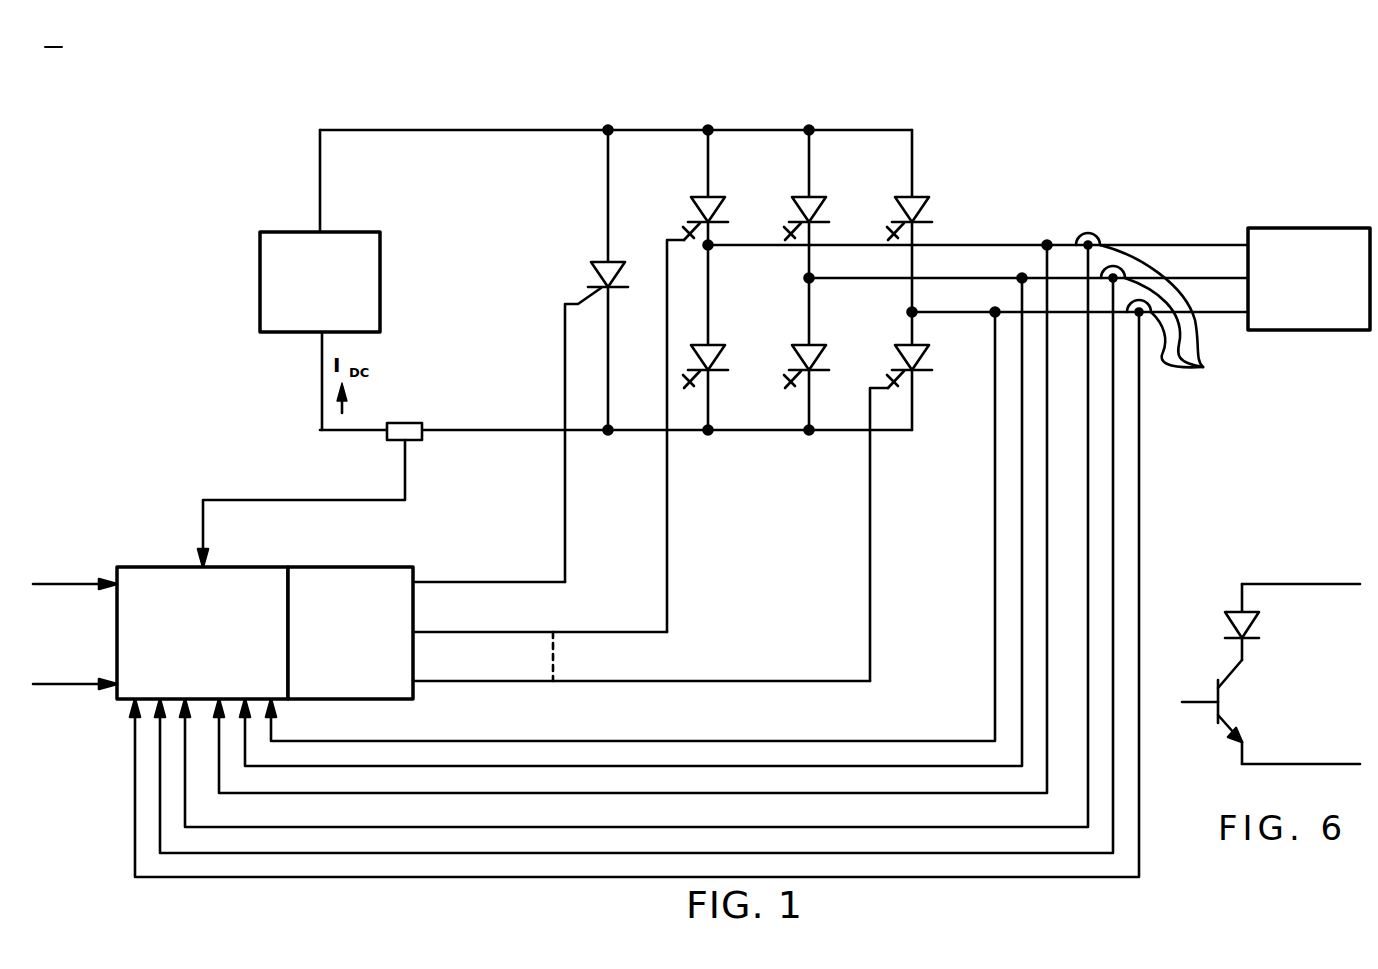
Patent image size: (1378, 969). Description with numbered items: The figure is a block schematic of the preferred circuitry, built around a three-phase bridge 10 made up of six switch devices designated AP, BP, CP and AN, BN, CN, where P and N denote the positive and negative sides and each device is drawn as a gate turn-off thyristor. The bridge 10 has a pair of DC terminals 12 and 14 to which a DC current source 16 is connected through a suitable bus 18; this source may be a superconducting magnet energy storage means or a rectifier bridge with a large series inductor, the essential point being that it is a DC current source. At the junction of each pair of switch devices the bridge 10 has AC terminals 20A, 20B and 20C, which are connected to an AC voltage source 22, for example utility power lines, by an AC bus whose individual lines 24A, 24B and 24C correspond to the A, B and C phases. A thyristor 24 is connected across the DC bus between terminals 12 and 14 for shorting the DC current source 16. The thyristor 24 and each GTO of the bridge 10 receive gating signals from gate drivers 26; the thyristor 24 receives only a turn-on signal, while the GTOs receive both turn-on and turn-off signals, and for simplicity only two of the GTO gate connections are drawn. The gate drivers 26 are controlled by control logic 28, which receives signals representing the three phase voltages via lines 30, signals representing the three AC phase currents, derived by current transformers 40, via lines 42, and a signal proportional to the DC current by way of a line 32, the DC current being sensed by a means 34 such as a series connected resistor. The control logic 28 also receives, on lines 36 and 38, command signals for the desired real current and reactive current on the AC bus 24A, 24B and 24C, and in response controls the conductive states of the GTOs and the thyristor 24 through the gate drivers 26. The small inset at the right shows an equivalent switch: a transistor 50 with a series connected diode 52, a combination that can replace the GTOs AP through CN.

In FIG. 1, the three-phase bridge 10 is at (872, 158).
In FIG. 1, the DC terminal 12 is at (708, 128).
In FIG. 1, the DC terminal 14 is at (708, 432).
In FIG. 1, the DC current source 16 is at (352, 232).
In FIG. 1, the bus 18 is at (453, 130).
In FIG. 1, the AC terminal 20A is at (710, 248).
In FIG. 1, the AC terminal 20B is at (811, 281).
In FIG. 1, the AC terminal 20C is at (914, 310).
In FIG. 1, the AC voltage source 22 is at (1327, 228).
In FIG. 1, the thyristor 24 is at (597, 262).
In FIG. 1, the AC bus line 24A is at (1150, 245).
In FIG. 1, the AC bus line 24B is at (1215, 278).
In FIG. 1, the AC bus line 24C is at (1063, 311).
In FIG. 1, the gate drivers 26 is at (385, 567).
In FIG. 1, the control logic 28 is at (165, 567).
In FIG. 1, the lines 30 is at (1047, 521).
In FIG. 1, the line 32 is at (248, 500).
In FIG. 1, the DC current sensing means 34 is at (380, 441).
In FIG. 1, the line 36 is at (57, 588).
In FIG. 1, the line 38 is at (57, 688).
In FIG. 1, the current transformers 40 is at (1153, 308).
In FIG. 1, the lines 42 is at (1089, 543).
In FIG. 6, the transistor 50 is at (1222, 697).
In FIG. 6, the series connected diode 52 is at (1257, 628).